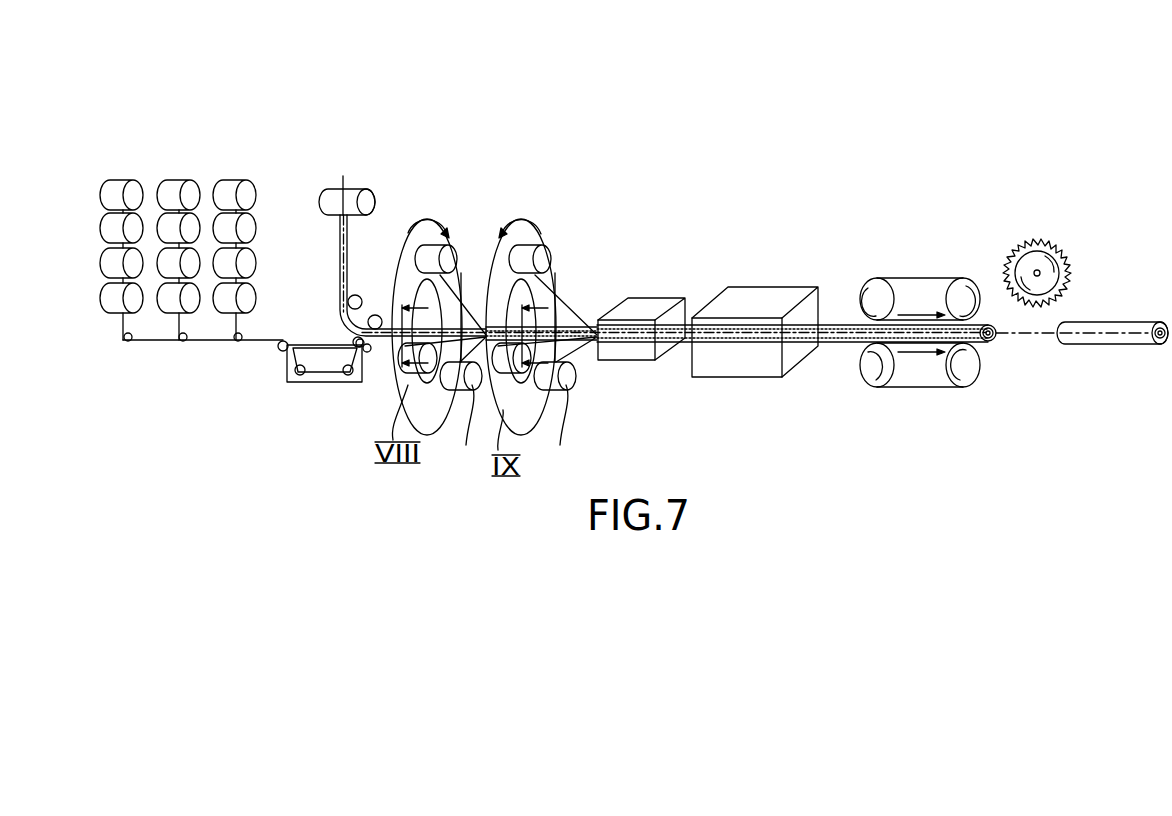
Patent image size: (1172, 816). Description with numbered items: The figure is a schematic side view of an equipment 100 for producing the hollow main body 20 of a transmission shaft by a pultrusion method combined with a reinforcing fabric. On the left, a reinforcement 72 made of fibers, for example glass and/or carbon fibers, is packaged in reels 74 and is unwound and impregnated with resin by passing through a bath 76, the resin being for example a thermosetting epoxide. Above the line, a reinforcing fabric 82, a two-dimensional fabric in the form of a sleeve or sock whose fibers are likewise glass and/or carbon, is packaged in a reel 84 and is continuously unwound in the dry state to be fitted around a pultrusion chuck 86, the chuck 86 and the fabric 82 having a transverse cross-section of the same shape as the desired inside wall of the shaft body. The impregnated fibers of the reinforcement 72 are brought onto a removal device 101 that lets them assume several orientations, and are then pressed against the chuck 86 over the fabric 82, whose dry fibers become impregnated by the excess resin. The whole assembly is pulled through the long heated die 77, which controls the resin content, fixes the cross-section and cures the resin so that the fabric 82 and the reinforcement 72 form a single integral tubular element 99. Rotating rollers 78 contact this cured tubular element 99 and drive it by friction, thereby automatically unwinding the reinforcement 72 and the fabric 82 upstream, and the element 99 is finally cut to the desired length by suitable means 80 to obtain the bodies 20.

The equipment 100 is at (217, 115).
The reels 74 is at (230, 188).
The reinforcement 72 is at (258, 341).
The reel 84 is at (336, 193).
The reinforcing fabric 82 is at (358, 242).
The bath 76 is at (317, 386).
The removal device 101 is at (458, 250).
The pultrusion chuck 86 is at (457, 395).
The heated die 77 is at (820, 270).
The tubular element 99 is at (836, 325).
The rollers 78 is at (915, 278).
The cutting means 80 is at (1063, 248).
The hollow main body 20 is at (1108, 310).